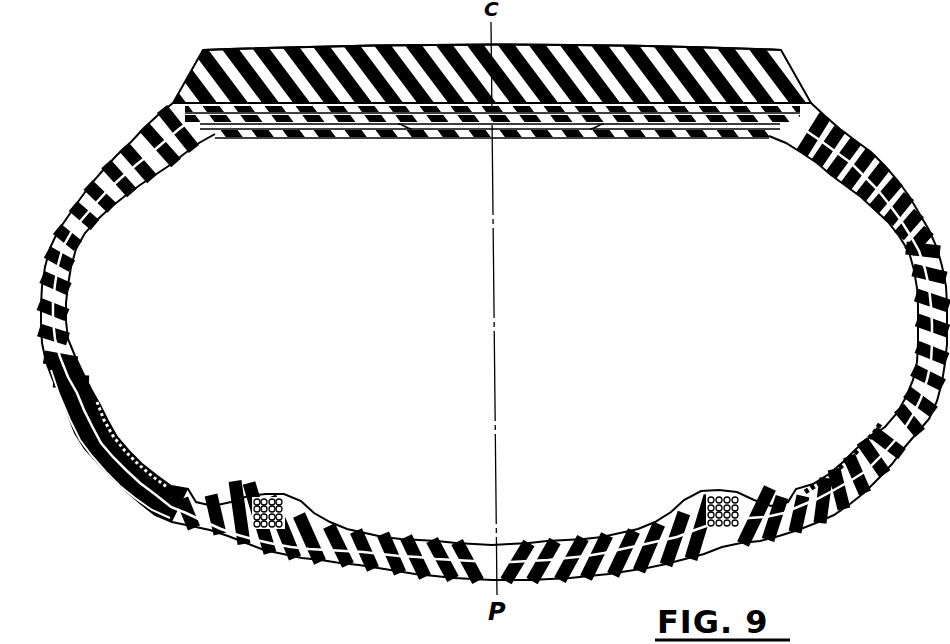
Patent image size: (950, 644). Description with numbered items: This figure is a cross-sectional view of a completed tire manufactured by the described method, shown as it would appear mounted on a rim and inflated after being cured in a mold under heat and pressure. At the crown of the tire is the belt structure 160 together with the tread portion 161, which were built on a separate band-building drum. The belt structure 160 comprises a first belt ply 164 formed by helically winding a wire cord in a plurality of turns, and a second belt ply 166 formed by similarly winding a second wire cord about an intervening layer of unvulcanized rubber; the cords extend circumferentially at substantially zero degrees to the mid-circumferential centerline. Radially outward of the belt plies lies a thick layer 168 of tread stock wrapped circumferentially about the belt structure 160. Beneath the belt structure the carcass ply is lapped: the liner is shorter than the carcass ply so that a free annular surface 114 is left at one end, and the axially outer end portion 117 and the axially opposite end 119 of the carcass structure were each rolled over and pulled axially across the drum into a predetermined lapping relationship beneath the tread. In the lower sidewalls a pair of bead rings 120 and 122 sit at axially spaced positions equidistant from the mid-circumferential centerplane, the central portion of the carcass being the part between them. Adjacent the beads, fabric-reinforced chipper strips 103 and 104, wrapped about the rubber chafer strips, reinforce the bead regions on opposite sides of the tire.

The belt structure 160 is at (206, 109).
The tread portion 161 is at (249, 48).
The layer of tread stock 168 is at (710, 55).
The second belt ply 166 is at (750, 100).
The first belt ply 164 is at (785, 108).
The free annular surface 114 is at (506, 132).
The axially outer end portion of the carcass structure 117 is at (407, 137).
The axially opposite end of the carcass structure 119 is at (600, 137).
The bead ring 120 is at (250, 502).
The bead ring 122 is at (720, 500).
The chipper strip 103 is at (137, 495).
The chipper strip 104 is at (860, 485).